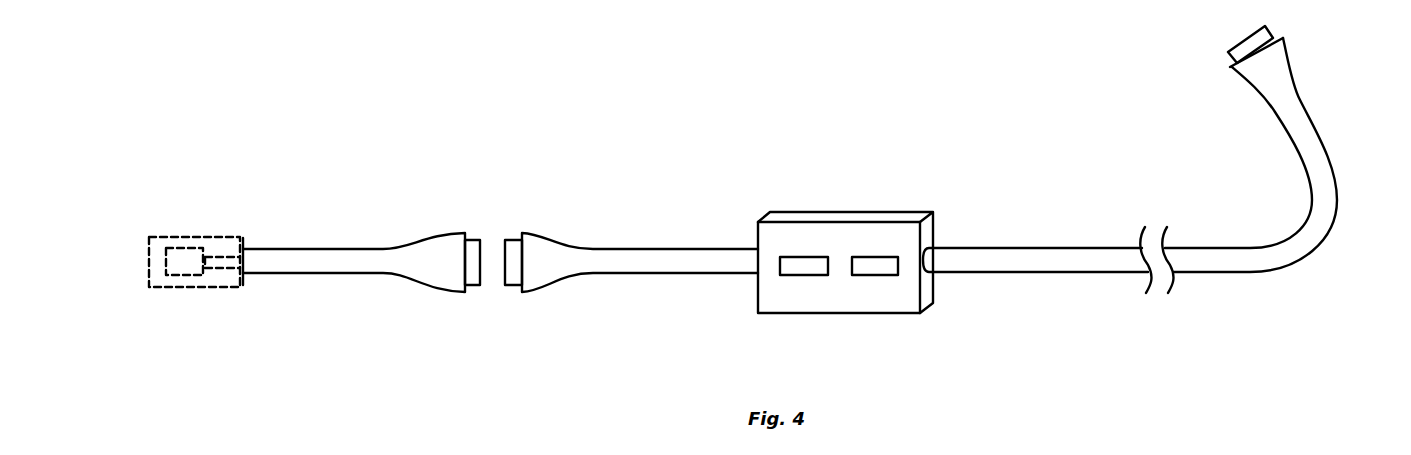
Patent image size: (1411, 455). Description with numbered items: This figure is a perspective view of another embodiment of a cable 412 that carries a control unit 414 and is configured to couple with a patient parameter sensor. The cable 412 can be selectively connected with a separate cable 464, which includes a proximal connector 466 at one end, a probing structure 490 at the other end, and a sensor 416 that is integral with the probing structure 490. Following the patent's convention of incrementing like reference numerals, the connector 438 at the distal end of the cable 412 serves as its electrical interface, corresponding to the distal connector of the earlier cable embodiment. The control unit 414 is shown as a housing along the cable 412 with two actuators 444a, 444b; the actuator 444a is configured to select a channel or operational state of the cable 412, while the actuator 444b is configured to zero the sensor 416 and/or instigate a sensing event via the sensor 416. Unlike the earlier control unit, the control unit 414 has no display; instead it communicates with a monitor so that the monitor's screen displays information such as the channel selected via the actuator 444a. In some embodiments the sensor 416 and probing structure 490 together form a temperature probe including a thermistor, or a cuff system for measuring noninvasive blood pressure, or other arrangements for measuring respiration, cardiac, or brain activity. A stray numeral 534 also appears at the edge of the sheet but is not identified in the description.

The cable 412 is at (1294, 286).
The control unit 414 is at (869, 230).
The sensor 416 is at (177, 238).
The connector 438 is at (517, 240).
The actuator 444a is at (807, 265).
The actuator 444b is at (873, 265).
The cable 464 is at (353, 262).
The proximal connector 466 is at (471, 242).
The probing structure 490 is at (175, 306).
The element 534 is at (1303, 454).